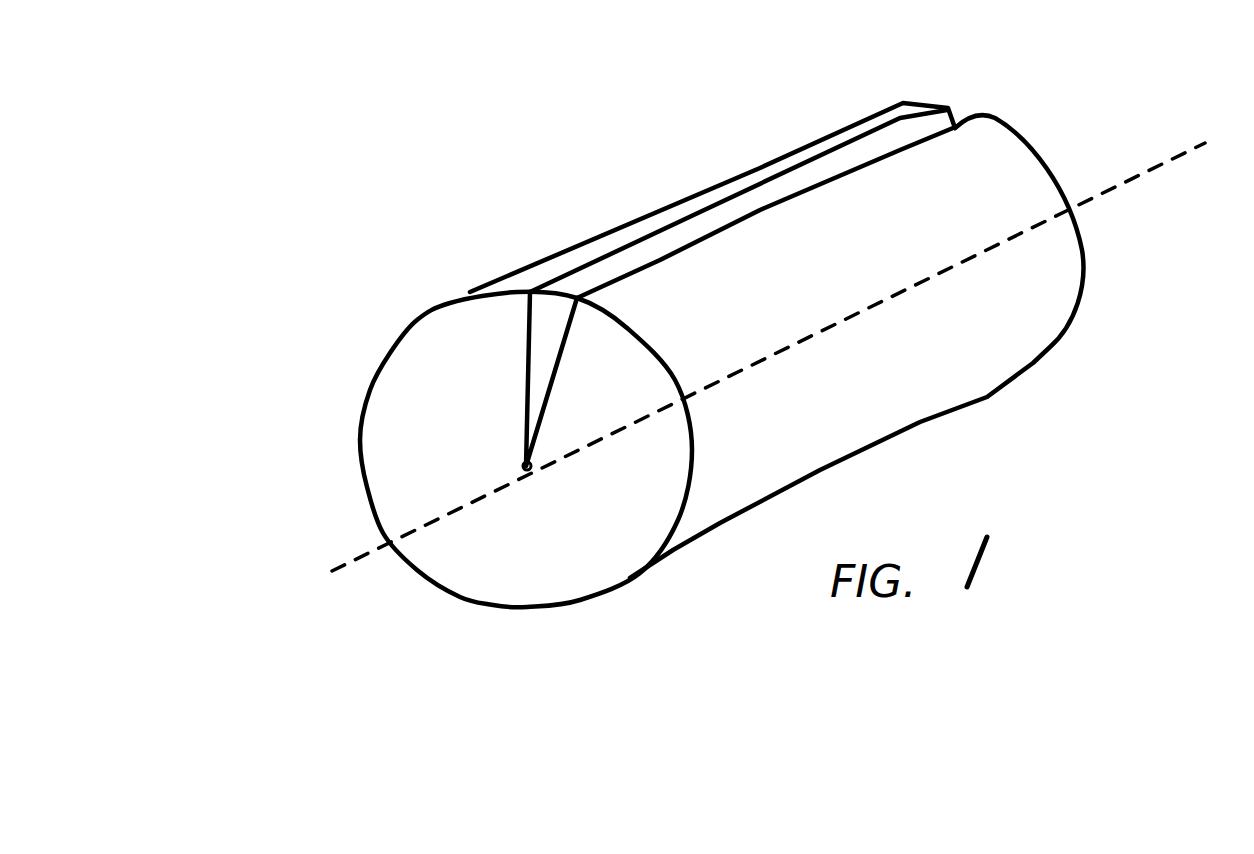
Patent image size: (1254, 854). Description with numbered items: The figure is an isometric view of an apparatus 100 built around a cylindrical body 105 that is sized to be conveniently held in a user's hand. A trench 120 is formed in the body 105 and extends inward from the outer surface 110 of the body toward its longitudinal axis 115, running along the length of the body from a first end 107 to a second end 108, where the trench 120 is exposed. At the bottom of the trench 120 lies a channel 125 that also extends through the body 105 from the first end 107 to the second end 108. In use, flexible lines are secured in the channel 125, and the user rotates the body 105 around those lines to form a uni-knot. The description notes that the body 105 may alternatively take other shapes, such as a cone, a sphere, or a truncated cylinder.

The apparatus 100 is at (723, 372).
The cylindrical body 105 is at (442, 410).
The first end 107 is at (301, 486).
The second end 108 is at (832, 320).
The outer surface 110 is at (912, 346).
The longitudinal axis 115 is at (793, 357).
The trench 120 is at (754, 372).
The channel 125 is at (514, 602).